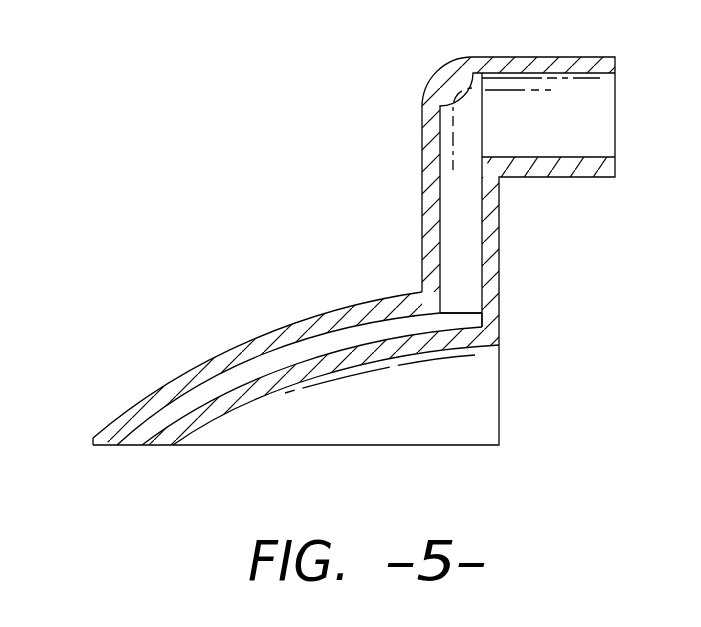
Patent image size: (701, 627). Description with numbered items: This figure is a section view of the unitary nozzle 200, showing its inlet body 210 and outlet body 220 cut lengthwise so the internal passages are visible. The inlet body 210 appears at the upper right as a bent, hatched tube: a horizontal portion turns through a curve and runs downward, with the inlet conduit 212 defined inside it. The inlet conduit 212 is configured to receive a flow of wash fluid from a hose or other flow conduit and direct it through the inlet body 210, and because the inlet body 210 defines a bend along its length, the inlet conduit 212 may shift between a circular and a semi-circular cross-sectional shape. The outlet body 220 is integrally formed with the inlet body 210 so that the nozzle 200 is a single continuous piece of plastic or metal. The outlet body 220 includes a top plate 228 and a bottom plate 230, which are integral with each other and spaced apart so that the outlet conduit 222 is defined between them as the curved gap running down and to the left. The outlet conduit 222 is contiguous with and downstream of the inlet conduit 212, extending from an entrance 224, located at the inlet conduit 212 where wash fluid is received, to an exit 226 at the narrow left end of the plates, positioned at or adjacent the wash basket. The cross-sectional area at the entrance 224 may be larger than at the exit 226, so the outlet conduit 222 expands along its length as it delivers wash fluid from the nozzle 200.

The nozzle 200 is at (333, 254).
The inlet body 210 is at (540, 64).
The inlet conduit 212 is at (458, 209).
The outlet body 220 is at (470, 392).
The outlet conduit 222 is at (218, 384).
The entrance 224 is at (458, 301).
The exit 226 is at (124, 452).
The top plate 228 is at (322, 319).
The bottom plate 230 is at (229, 397).